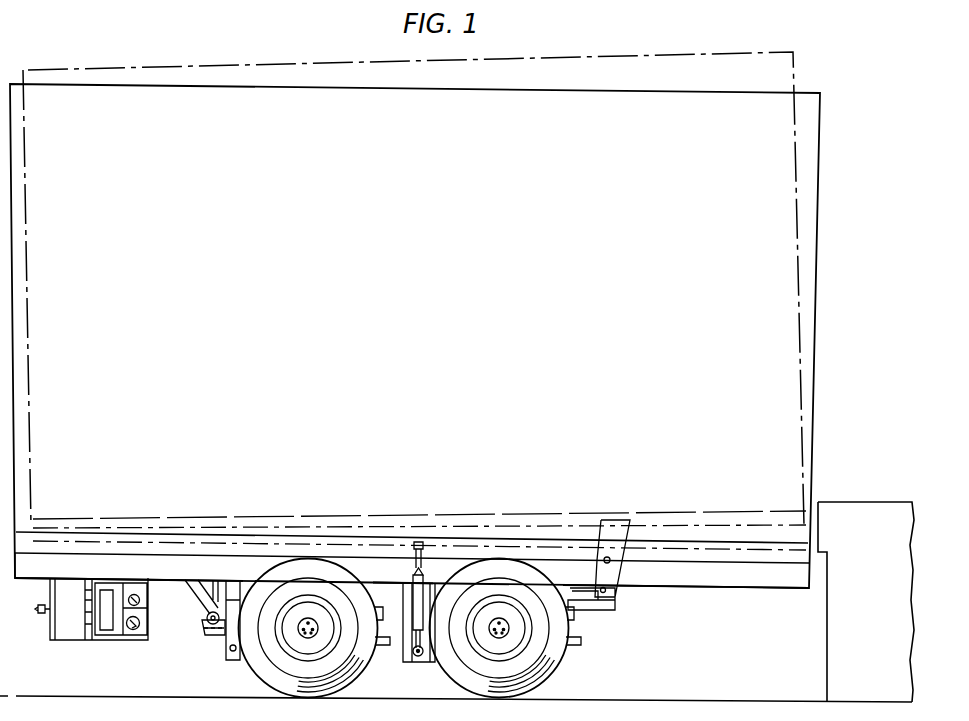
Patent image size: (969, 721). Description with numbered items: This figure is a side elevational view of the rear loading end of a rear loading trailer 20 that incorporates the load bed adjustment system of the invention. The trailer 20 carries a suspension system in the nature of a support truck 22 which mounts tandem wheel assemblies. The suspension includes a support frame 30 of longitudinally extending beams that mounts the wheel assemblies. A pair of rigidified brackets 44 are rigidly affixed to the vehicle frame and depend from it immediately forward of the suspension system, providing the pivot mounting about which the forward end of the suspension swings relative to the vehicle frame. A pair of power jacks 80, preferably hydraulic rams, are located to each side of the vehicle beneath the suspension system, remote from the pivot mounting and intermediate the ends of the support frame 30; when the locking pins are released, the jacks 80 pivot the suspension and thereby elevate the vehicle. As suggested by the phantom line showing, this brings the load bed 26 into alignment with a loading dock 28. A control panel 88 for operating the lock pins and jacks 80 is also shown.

The rear loading trailer 20 is at (812, 262).
The support truck 22 is at (222, 654).
The load bed 26 is at (731, 540).
The loading dock 28 is at (847, 508).
The support frame 30 is at (380, 583).
The rigidified brackets 44 is at (201, 611).
The power jacks 80 is at (430, 581).
The control panel 88 is at (133, 636).